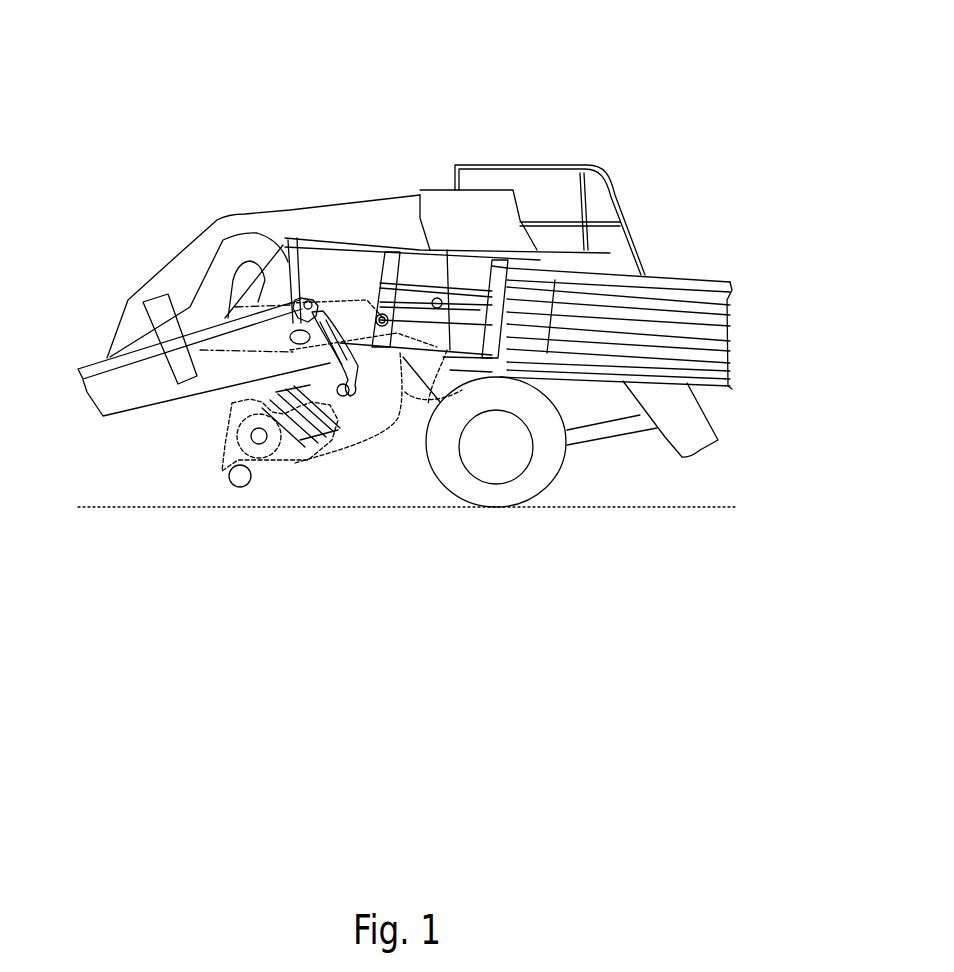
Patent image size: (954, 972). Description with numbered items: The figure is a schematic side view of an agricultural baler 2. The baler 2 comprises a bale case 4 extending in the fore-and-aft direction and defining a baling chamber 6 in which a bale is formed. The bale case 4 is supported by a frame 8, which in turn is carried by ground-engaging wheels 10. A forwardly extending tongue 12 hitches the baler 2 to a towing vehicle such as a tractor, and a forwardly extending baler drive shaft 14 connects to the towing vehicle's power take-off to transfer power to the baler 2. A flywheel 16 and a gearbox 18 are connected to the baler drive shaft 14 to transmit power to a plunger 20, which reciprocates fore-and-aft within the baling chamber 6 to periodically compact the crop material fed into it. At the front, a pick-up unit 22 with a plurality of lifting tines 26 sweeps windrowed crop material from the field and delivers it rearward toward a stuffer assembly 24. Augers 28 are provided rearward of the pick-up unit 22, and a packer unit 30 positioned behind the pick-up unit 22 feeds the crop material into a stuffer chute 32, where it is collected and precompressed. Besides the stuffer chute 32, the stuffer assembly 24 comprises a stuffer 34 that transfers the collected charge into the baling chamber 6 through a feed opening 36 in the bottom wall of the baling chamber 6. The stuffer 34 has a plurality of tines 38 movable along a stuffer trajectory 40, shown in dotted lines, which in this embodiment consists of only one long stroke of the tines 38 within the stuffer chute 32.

The agricultural baler 2 is at (622, 113).
The bale case 4 is at (681, 258).
The baling chamber 6 is at (463, 280).
The frame 8 is at (683, 418).
The ground-engaging wheels 10 is at (533, 485).
The tongue 12 is at (110, 393).
The baler drive shaft 14 is at (83, 368).
The flywheel 16 is at (152, 310).
The gearbox 18 is at (223, 265).
The plunger 20 is at (418, 275).
The pick-up unit 22 is at (233, 468).
The stuffer assembly 24 is at (300, 377).
The lifting tines 26 is at (238, 476).
The augers 28 is at (258, 436).
The packer unit 30 is at (290, 448).
The stuffer chute 32 is at (447, 350).
The stuffer 34 is at (352, 372).
The feed opening 36 is at (418, 343).
The tines 38 is at (348, 396).
The stuffer trajectory 40 is at (356, 433).